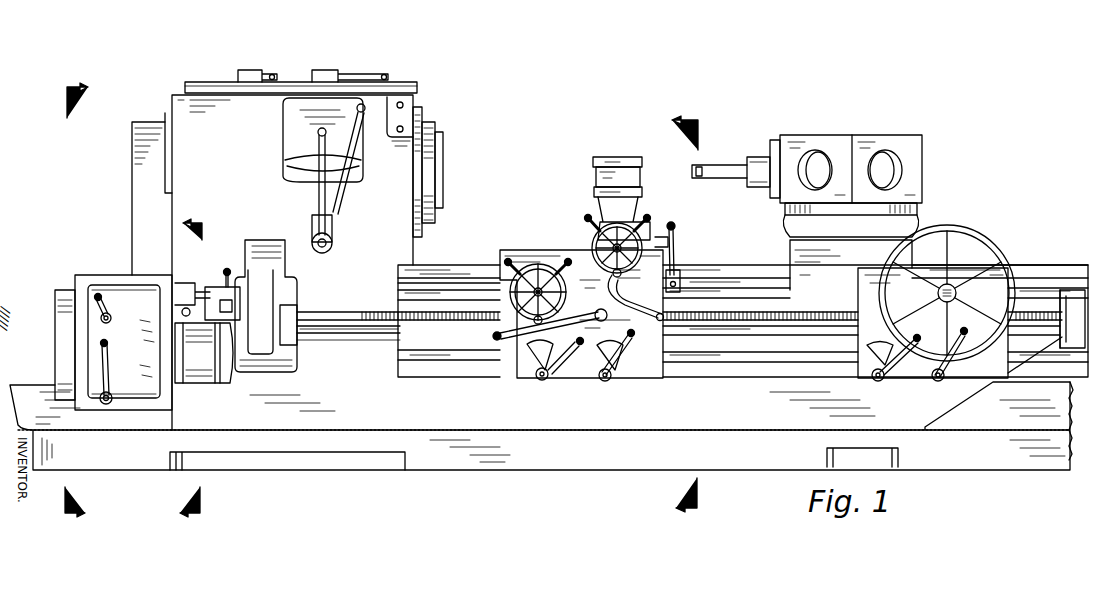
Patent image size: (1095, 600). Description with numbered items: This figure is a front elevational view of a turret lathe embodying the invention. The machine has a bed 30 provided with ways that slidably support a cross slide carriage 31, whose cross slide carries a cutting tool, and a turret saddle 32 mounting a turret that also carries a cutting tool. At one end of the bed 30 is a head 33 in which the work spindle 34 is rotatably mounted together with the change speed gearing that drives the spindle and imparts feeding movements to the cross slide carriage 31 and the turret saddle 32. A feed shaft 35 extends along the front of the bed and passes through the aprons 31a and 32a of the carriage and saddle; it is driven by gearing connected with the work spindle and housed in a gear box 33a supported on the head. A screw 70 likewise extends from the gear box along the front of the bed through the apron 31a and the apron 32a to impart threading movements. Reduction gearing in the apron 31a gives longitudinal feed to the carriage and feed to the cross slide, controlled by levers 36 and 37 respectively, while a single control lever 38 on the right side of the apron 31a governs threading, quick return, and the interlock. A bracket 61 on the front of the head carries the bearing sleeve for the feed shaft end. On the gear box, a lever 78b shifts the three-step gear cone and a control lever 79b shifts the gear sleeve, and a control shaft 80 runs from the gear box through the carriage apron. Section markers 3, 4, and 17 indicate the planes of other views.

The section line for FIG. 3 is at (83, 293).
The section line for FIG. 4 is at (185, 358).
The section line for FIG. 17 is at (674, 304).
The bed 30 is at (743, 331).
The cross slide carriage 31 is at (525, 250).
The apron of the cross slide carriage 31a is at (572, 378).
The turret saddle 32 is at (1010, 253).
The apron of the turret saddle 32a is at (910, 378).
The head 33 is at (172, 100).
The gear box 33a is at (135, 208).
The work spindle 34 is at (443, 155).
The feed shaft 35 is at (373, 330).
The lever 36 is at (522, 342).
The lever 37 is at (655, 360).
The single control lever 38 is at (675, 237).
The bracket 61 is at (283, 262).
The screw 70 is at (345, 310).
The lever 78b is at (110, 356).
The control lever 79b is at (108, 302).
The control shaft 80 is at (333, 340).